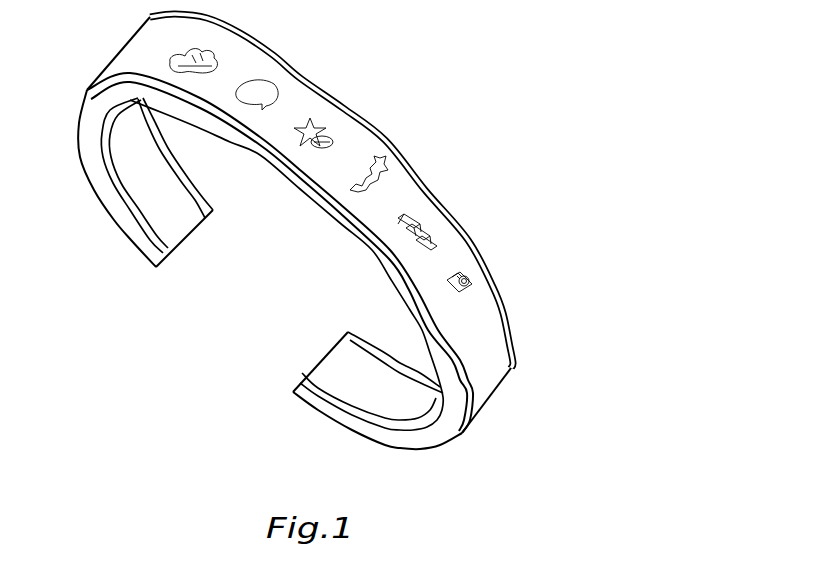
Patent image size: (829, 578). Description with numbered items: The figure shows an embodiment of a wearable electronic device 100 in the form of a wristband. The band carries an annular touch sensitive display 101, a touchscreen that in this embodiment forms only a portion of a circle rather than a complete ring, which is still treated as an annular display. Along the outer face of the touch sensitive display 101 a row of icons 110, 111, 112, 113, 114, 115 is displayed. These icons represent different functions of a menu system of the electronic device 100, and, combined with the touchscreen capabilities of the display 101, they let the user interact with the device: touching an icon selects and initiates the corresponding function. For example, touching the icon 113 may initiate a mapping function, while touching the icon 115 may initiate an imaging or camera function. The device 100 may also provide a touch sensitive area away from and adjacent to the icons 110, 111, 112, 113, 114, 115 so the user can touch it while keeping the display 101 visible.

The wearable electronic device 100 is at (294, 224).
The touch sensitive display 101 is at (113, 66).
The icon 110 is at (203, 56).
The icon 111 is at (263, 85).
The icon 112 is at (323, 127).
The icon 113 is at (375, 163).
The icon 114 is at (416, 220).
The icon 115 is at (462, 273).